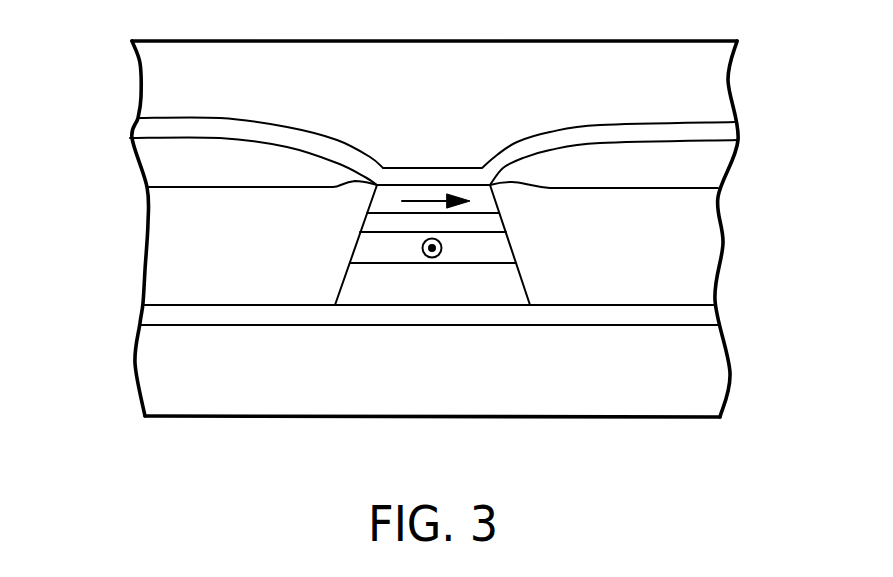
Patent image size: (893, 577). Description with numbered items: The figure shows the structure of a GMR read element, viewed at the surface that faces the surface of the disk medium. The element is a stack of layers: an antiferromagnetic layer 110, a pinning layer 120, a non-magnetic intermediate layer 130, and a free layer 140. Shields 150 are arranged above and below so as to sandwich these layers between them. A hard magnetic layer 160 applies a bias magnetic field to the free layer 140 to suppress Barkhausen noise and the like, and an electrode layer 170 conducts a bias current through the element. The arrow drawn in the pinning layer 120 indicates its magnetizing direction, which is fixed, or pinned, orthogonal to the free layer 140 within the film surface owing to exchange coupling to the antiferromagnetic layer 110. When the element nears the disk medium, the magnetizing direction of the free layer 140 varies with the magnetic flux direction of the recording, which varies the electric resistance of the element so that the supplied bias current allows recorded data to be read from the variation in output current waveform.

The antiferromagnetic layer 110 is at (485, 288).
The pinning layer 120 is at (408, 255).
The non-magnetic intermediate layer 130 is at (473, 217).
The free layer 140 is at (420, 195).
The shields 150 is at (720, 81).
The hard magnetic layer 160 is at (152, 242).
The electrode layer 170 is at (152, 159).